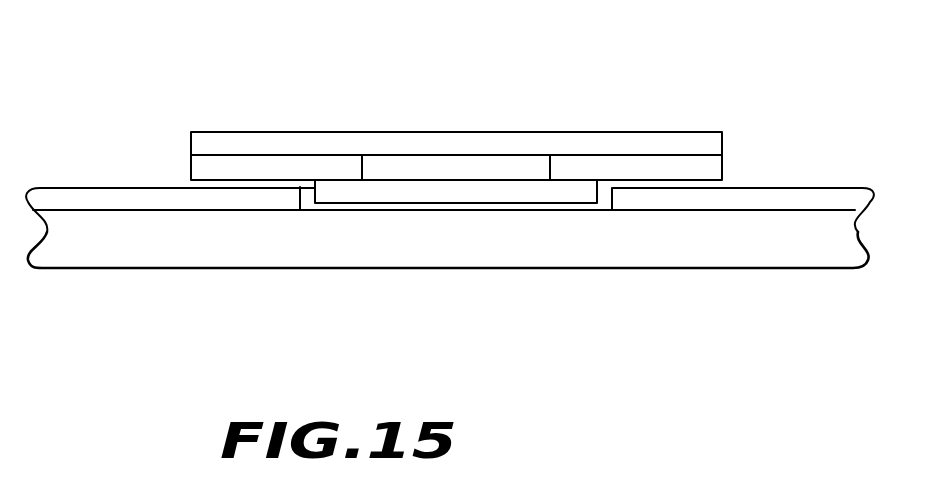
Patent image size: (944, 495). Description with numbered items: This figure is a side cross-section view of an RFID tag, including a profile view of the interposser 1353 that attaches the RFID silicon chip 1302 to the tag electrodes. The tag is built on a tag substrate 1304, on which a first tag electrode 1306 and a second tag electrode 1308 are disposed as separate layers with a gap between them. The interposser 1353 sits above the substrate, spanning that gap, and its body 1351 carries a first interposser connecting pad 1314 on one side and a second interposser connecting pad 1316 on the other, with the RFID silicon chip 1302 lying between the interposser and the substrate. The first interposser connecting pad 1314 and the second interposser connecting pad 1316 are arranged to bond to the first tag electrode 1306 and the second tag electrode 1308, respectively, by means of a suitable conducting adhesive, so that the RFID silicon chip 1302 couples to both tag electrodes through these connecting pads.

The interposser 1353 is at (642, 93).
The top substrate layer 1351 is at (460, 143).
The first interposser connecting pad 1314 is at (223, 168).
The second interposser connecting pad 1316 is at (690, 169).
The RFID silicon chip 1302 is at (430, 196).
The first tag electrode 1306 is at (144, 199).
The second tag electrode 1308 is at (790, 197).
The tag substrate 1304 is at (633, 247).